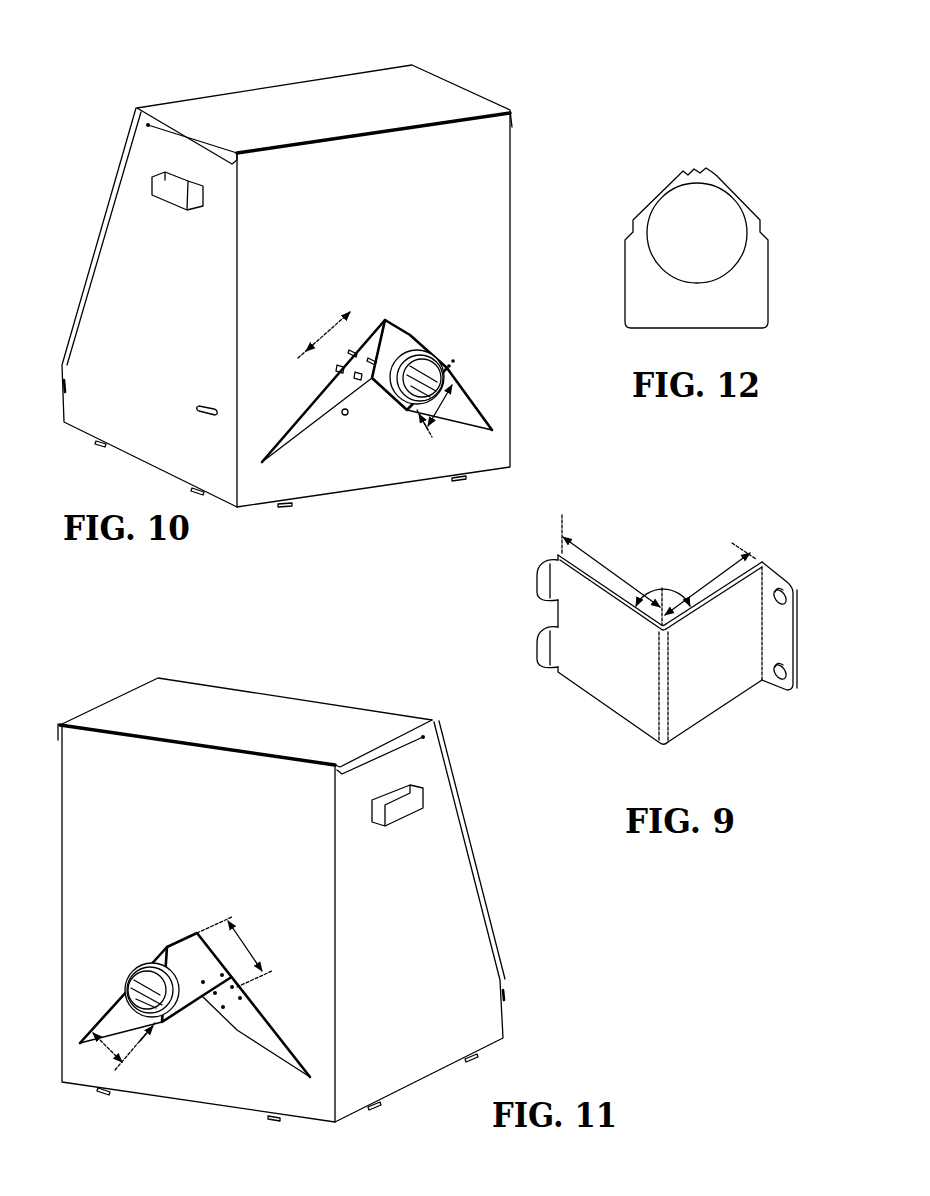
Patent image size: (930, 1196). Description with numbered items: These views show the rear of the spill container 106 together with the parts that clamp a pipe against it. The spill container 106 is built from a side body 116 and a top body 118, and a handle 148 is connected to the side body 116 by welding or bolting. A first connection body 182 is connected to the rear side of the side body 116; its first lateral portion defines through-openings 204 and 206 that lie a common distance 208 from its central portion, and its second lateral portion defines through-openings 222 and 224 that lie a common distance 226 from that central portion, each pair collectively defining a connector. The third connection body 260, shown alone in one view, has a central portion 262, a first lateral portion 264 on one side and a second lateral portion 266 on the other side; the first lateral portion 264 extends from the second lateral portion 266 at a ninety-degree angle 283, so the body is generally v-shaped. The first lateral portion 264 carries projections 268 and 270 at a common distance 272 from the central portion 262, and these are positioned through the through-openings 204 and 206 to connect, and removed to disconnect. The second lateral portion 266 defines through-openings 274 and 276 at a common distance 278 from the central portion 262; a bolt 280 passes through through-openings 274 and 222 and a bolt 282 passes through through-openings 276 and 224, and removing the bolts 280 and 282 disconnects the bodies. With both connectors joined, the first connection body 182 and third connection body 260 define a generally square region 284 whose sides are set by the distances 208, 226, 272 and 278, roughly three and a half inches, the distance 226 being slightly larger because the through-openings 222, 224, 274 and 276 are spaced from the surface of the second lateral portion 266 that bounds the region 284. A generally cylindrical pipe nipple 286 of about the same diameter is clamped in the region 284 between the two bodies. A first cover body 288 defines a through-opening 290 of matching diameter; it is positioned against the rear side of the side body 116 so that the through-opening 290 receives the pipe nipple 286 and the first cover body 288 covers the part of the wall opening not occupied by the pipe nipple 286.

In FIG. 10, the spill container 106 is at (517, 91).
In FIG. 11, the spill container 106 is at (119, 671).
In FIG. 10, the side body 116 is at (487, 217).
In FIG. 11, the side body 116 is at (170, 768).
In FIG. 10, the top body 118 is at (282, 102).
In FIG. 11, the top body 118 is at (235, 708).
In FIG. 11, the handle 148 is at (402, 811).
In FIG. 10, the first connection body 182 is at (473, 403).
In FIG. 11, the first connection body 182 is at (288, 1043).
In FIG. 10, the through-opening 204 is at (369, 358).
In FIG. 10, the through-opening 206 is at (349, 349).
In FIG. 10, the common distance 208 is at (330, 335).
In FIG. 10, the through-opening 222 is at (449, 366).
In FIG. 11, the through-opening 222 is at (211, 980).
In FIG. 11, the through-opening 224 is at (238, 975).
In FIG. 11, the common distance 226 is at (232, 923).
In FIG. 9, the third connection body 260 is at (710, 685).
In FIG. 9, the central portion 262 is at (667, 727).
In FIG. 10, the first lateral portion 264 is at (375, 400).
In FIG. 9, the first lateral portion 264 is at (595, 690).
In FIG. 9, the second lateral portion 266 is at (733, 600).
In FIG. 11, the second lateral portion 266 is at (193, 1013).
In FIG. 10, the projection 268 is at (358, 382).
In FIG. 9, the projection 268 is at (532, 590).
In FIG. 10, the projection 270 is at (340, 378).
In FIG. 9, the projection 270 is at (532, 657).
In FIG. 9, the common distance 272 is at (580, 541).
In FIG. 11, the common distance 272 is at (105, 1053).
In FIG. 9, the through-opening 274 is at (802, 589).
In FIG. 9, the through-opening 276 is at (804, 665).
In FIG. 10, the common distance 278 is at (452, 393).
In FIG. 9, the common distance 278 is at (732, 543).
In FIG. 10, the bolt 280 is at (455, 360).
In FIG. 11, the bolt 280 is at (227, 1013).
In FIG. 11, the bolt 282 is at (238, 1005).
In FIG. 9, the angle 283 is at (673, 596).
In FIG. 10, the region 284 is at (420, 420).
In FIG. 11, the region 284 is at (152, 1030).
In FIG. 10, the pipe nipple 286 is at (407, 343).
In FIG. 11, the pipe nipple 286 is at (168, 962).
In FIG. 10, the first cover body 288 is at (380, 410).
In FIG. 12, the first cover body 288 is at (662, 193).
In FIG. 11, the first cover body 288 is at (182, 1024).
In FIG. 12, the through-opening 290 is at (706, 225).